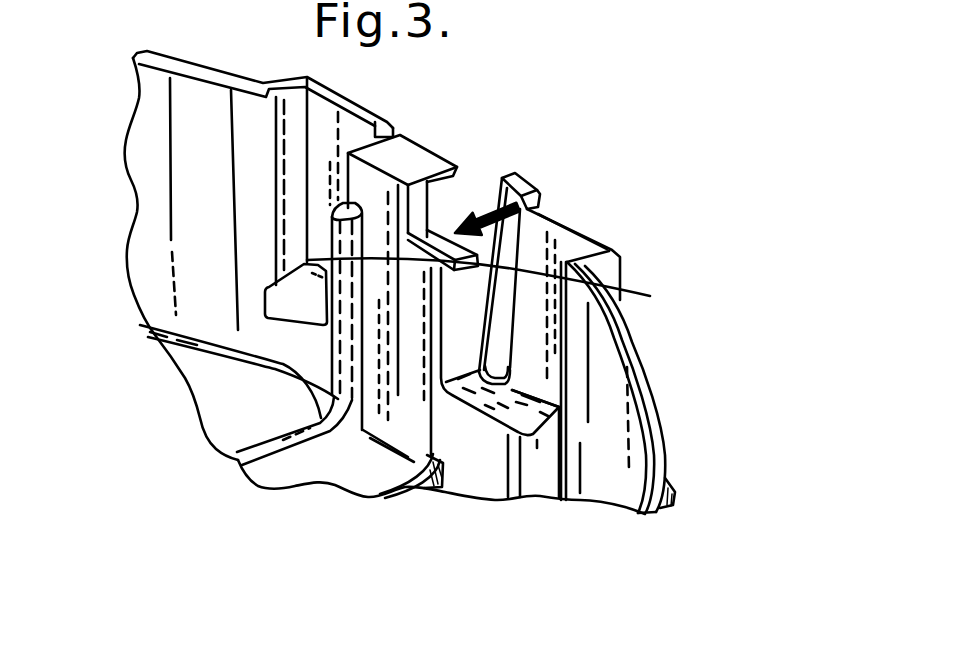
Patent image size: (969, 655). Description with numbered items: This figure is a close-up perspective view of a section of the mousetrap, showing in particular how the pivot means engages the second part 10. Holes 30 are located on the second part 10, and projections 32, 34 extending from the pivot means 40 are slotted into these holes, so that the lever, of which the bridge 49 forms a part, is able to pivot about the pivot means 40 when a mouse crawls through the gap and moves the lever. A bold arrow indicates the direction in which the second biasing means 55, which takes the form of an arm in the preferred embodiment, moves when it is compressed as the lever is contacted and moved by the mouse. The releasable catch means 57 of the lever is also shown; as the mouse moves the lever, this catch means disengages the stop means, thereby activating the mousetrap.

The second part 10 is at (670, 377).
The holes 30 is at (513, 392).
The projection 32 is at (530, 415).
The projection 34 is at (320, 300).
The pivot means 40 is at (465, 448).
The bridge 49 is at (295, 445).
The second biasing means 55 is at (515, 188).
The releasable catch means 57 is at (408, 160).